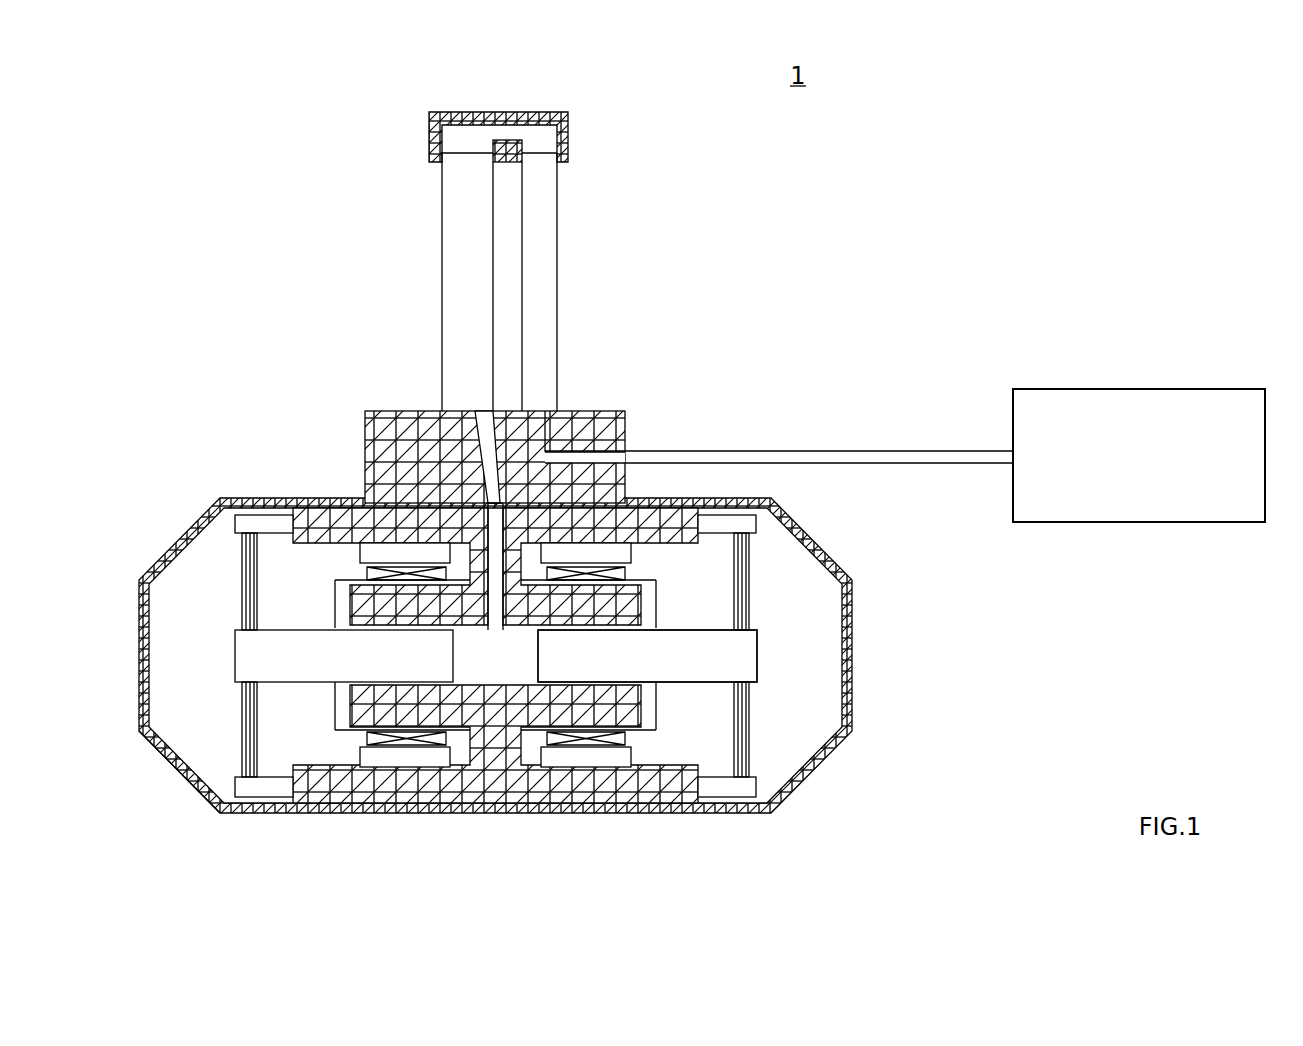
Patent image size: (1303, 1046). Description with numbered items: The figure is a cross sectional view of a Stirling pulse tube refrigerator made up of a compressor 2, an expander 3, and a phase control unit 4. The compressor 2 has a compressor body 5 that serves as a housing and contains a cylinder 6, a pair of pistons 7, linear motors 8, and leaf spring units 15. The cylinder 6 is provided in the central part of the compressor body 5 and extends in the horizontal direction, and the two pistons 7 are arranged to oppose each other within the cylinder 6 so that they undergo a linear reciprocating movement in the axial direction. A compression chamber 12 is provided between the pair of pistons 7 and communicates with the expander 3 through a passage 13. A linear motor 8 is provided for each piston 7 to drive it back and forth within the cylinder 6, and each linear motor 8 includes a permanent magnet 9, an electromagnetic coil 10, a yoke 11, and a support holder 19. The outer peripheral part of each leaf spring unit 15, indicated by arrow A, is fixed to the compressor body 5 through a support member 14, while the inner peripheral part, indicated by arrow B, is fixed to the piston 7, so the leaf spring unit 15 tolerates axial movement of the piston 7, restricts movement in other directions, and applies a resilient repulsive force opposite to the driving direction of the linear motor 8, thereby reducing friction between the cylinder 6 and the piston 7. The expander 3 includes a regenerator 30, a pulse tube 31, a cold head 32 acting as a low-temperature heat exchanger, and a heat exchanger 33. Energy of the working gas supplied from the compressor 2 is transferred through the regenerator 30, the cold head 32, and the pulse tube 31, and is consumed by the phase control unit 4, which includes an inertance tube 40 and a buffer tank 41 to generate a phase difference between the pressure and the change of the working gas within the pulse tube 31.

The compressor 2 is at (168, 532).
The expander 3 is at (492, 282).
The phase control unit 4 is at (905, 399).
The compressor body 5 is at (177, 777).
The cylinder 6 is at (617, 662).
The pistons 7 is at (255, 648).
The linear motors 8 is at (522, 604).
The permanent magnet 9 is at (628, 572).
The electromagnetic coil 10 is at (626, 552).
The yoke 11 is at (632, 523).
The compression chamber 12 is at (495, 657).
The passage 13 is at (495, 533).
The support member 14 is at (238, 523).
The leaf spring units 15 is at (232, 588).
The support holder 19 is at (657, 600).
The regenerator 30 is at (443, 251).
The pulse tube 31 is at (556, 251).
The cold head 32 is at (501, 112).
The heat exchanger 33 is at (393, 420).
The inertance tube 40 is at (915, 451).
The buffer tank 41 is at (1148, 390).